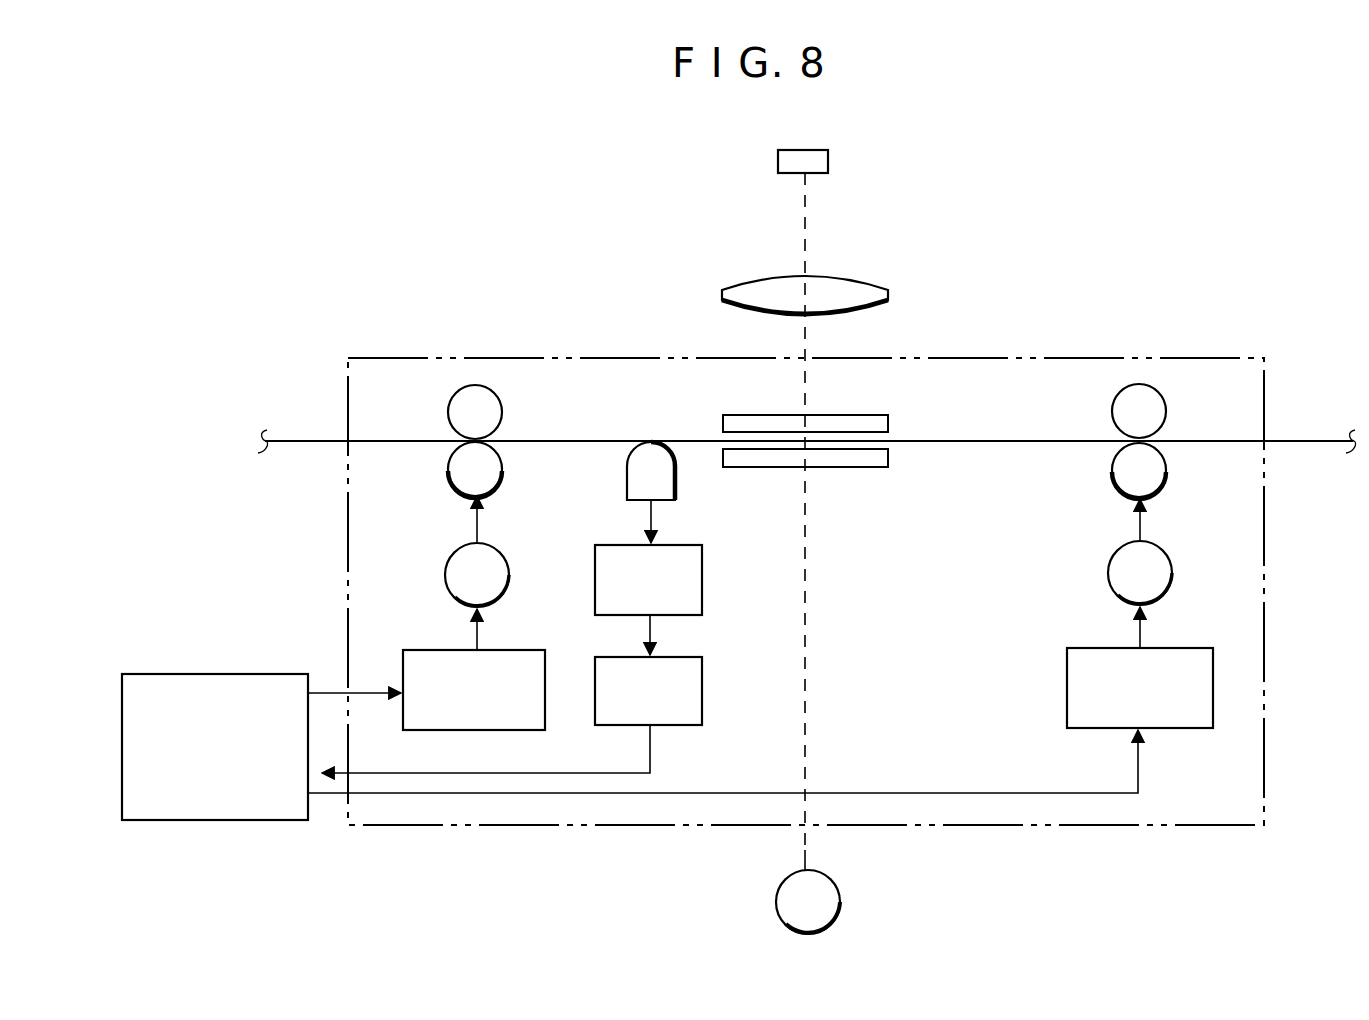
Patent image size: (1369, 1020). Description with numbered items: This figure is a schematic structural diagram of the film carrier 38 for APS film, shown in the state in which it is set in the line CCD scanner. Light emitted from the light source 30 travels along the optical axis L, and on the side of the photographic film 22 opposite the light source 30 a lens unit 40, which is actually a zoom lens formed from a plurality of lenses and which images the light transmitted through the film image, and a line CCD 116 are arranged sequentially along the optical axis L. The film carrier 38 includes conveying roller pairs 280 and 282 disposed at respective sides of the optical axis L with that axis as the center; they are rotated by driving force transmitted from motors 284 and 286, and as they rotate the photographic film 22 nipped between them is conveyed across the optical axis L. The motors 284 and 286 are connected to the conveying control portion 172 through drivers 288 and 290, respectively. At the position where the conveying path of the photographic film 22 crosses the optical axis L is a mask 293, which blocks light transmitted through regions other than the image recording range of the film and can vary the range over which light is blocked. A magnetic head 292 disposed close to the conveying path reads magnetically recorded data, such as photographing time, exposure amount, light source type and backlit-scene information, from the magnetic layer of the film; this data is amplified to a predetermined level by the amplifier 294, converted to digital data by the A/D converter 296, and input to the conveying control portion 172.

The photographic film 22 is at (1302, 443).
The light source 30 is at (840, 898).
The film carrier 38 is at (1195, 357).
The lens unit 40 is at (888, 296).
The line CCD 116 is at (828, 161).
The conveying control portion 172 is at (197, 821).
The conveying roller pair 280 is at (1112, 462).
The conveying roller pair 282 is at (500, 460).
The motor 284 is at (1108, 577).
The motor 286 is at (446, 570).
The driver 288 is at (1067, 692).
The driver 290 is at (462, 650).
The magnetic head 292 is at (676, 478).
The mask 293 is at (723, 421).
The amplifier (AMP) 294 is at (702, 578).
The A/D converter 296 is at (702, 689).
The optical axis L is at (806, 640).